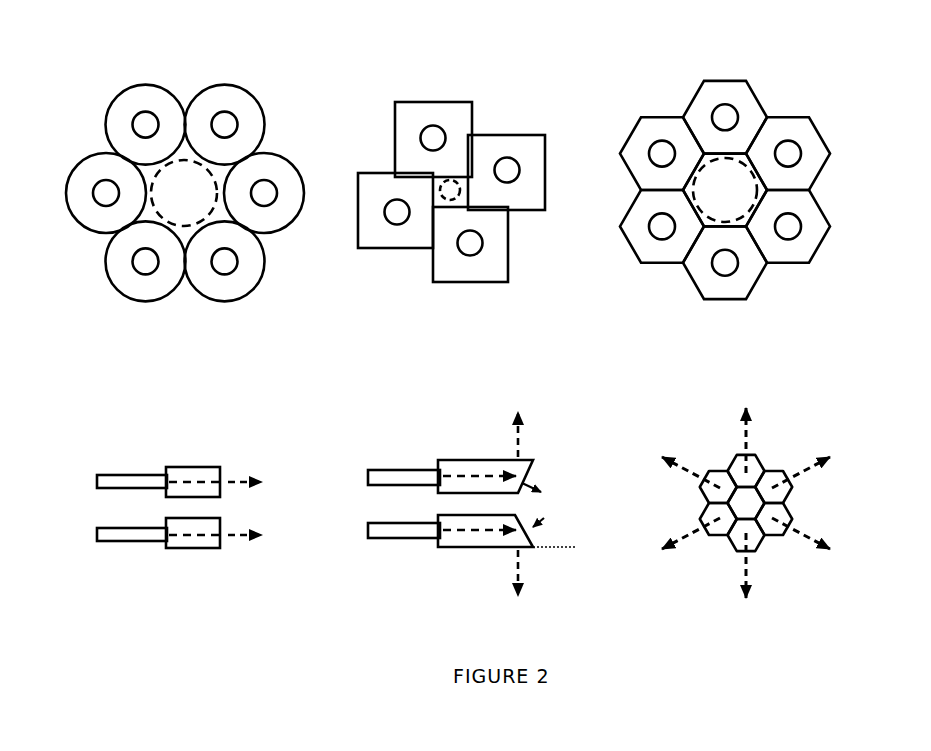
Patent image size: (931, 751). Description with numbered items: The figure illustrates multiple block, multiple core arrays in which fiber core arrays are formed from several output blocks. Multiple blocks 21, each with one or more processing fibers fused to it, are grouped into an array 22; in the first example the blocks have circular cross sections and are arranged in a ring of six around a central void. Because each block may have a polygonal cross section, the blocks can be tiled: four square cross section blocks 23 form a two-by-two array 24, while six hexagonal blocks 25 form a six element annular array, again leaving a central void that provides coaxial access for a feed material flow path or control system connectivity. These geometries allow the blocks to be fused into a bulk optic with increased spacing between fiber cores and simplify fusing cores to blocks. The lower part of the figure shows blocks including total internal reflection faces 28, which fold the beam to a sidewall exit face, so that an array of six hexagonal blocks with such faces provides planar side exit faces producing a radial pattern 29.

The block 21 is at (142, 284).
The array 22 is at (208, 72).
The square cross section block 23 is at (407, 239).
The 2×2 array 24 is at (483, 113).
The hexagonal block 25 is at (700, 277).
The total internal reflection (TIR) face 28 is at (548, 495).
The radial pattern 29 is at (705, 437).